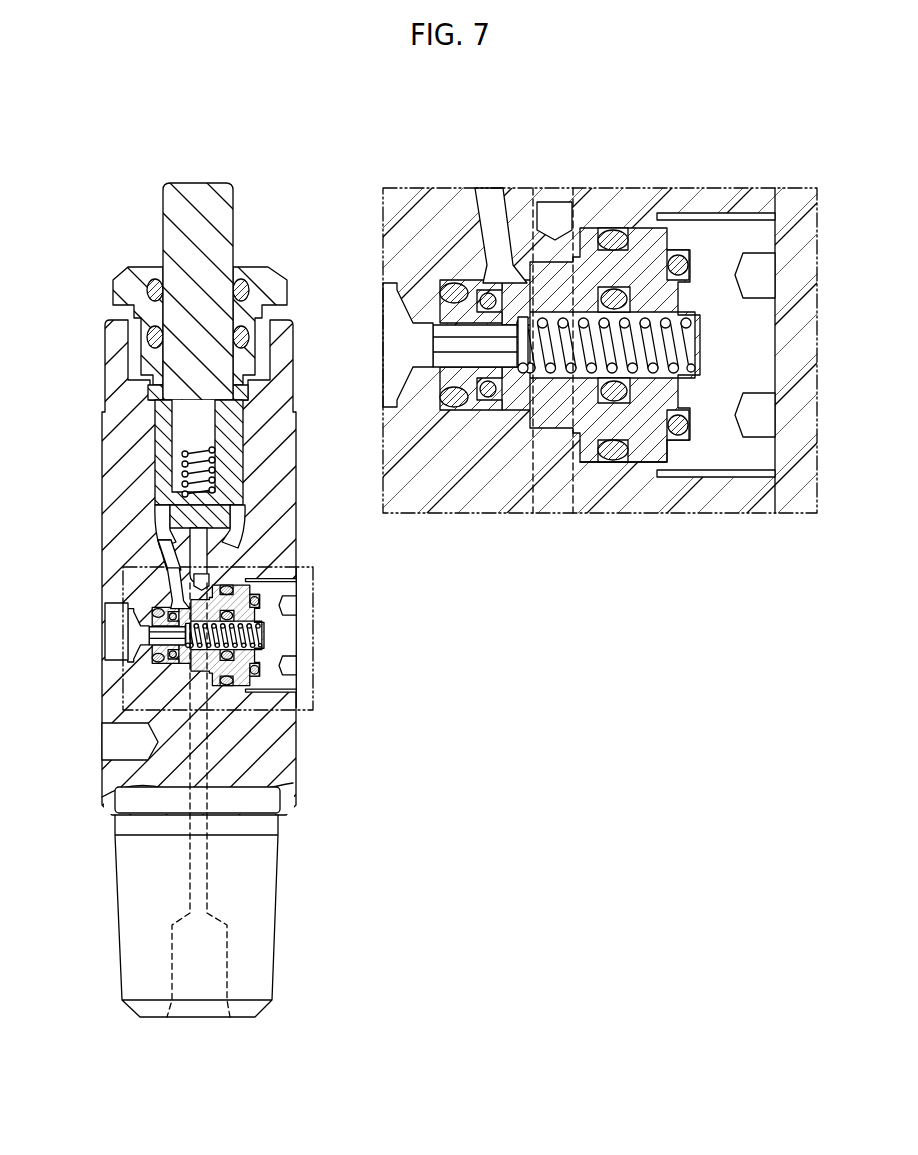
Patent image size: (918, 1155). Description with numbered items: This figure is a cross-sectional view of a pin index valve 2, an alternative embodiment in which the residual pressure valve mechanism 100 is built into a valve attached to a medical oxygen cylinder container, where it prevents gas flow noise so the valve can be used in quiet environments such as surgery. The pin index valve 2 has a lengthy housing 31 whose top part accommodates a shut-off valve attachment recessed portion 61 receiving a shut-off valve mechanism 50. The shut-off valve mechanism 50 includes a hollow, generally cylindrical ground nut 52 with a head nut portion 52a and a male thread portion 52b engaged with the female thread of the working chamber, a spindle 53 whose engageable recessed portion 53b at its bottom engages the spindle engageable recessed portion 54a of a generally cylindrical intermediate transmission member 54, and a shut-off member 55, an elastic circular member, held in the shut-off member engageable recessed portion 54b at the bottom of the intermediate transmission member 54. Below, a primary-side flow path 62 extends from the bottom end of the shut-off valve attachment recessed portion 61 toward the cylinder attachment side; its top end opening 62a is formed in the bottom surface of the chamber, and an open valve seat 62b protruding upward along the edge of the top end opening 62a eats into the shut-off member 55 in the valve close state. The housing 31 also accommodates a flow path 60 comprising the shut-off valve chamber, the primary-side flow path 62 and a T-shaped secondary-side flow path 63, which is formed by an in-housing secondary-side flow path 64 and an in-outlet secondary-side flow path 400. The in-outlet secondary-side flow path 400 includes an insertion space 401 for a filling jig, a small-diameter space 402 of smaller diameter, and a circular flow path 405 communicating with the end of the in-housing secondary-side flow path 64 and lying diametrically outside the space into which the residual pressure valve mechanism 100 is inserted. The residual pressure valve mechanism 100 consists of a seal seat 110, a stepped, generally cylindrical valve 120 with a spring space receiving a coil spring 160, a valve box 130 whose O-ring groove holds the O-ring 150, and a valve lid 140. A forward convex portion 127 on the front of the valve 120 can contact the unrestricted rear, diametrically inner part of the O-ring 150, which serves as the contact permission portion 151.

The pin index valve 2 is at (108, 216).
The housing 31 is at (290, 397).
The shut-off valve mechanism 50 is at (272, 262).
The ground nut 52 is at (288, 285).
The head nut portion 52a is at (113, 283).
The male thread portion 52b is at (140, 345).
The spindle 53 is at (236, 214).
The engageable recessed portion 53b is at (200, 447).
The intermediate transmission member 54 is at (223, 493).
The spindle engageable recessed portion 54a is at (243, 458).
The shut-off member engageable recessed portion 54b is at (157, 495).
The shut-off member 55 is at (217, 517).
The shut-off valve attachment recessed portion 61 is at (150, 400).
The primary-side flow path 62 is at (550, 485).
The top end opening 62a is at (186, 545).
The open valve seat 62b is at (203, 547).
The flow path 60 is at (198, 965).
The secondary-side flow path 63 is at (197, 638).
The in-housing secondary-side flow path 64 is at (490, 202).
The in-outlet secondary-side flow path 400 is at (112, 622).
The insertion space 401 is at (403, 300).
The small-diameter space 402 is at (424, 366).
The circular flow path 405 is at (450, 286).
The residual pressure valve mechanism 100 is at (788, 238).
The seal seat 110 is at (470, 410).
The valve 120 is at (573, 432).
The forward convex portion 127 is at (533, 283).
The valve box 130 is at (640, 466).
The valve lid 140 is at (783, 387).
The O-ring 150 is at (612, 240).
The contact permission portion 151 is at (492, 396).
The coil spring 160 is at (705, 345).